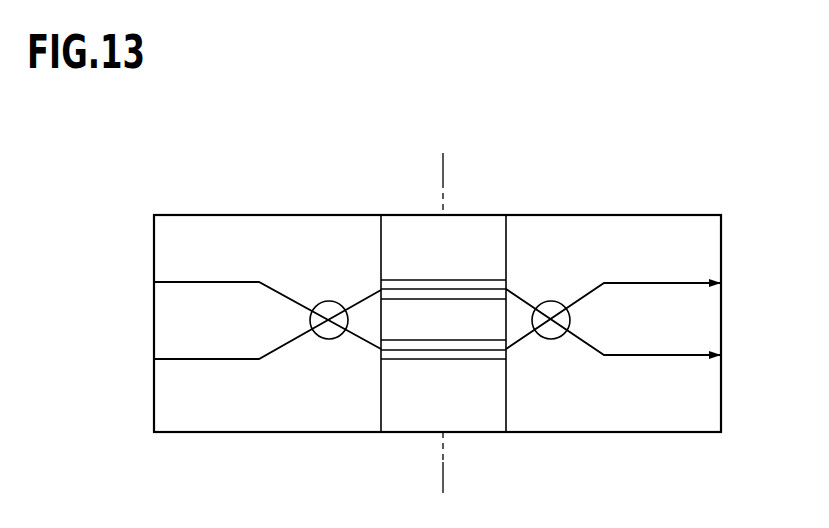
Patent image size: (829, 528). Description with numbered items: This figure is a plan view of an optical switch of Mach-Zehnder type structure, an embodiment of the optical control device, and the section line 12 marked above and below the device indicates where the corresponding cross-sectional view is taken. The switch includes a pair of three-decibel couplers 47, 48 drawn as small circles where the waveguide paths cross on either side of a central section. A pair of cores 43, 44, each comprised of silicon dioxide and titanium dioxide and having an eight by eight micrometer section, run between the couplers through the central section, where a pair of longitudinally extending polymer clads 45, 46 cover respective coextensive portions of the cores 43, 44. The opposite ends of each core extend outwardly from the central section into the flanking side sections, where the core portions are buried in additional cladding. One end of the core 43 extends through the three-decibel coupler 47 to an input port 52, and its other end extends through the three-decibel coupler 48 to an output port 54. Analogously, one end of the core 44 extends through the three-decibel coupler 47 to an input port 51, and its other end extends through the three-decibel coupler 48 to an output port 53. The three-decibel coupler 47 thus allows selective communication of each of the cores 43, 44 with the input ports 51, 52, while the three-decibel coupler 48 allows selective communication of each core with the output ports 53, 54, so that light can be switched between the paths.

The section line 12 is at (443, 175).
The core 43 is at (398, 289).
The core 44 is at (407, 351).
The polymer clad 45 is at (450, 280).
The polymer clad 46 is at (467, 360).
The 3 dB coupler 47 is at (329, 301).
The 3 dB coupler 48 is at (552, 301).
The input port 51 is at (154, 282).
The input port 52 is at (154, 359).
The output port 53 is at (722, 283).
The output port 54 is at (722, 355).